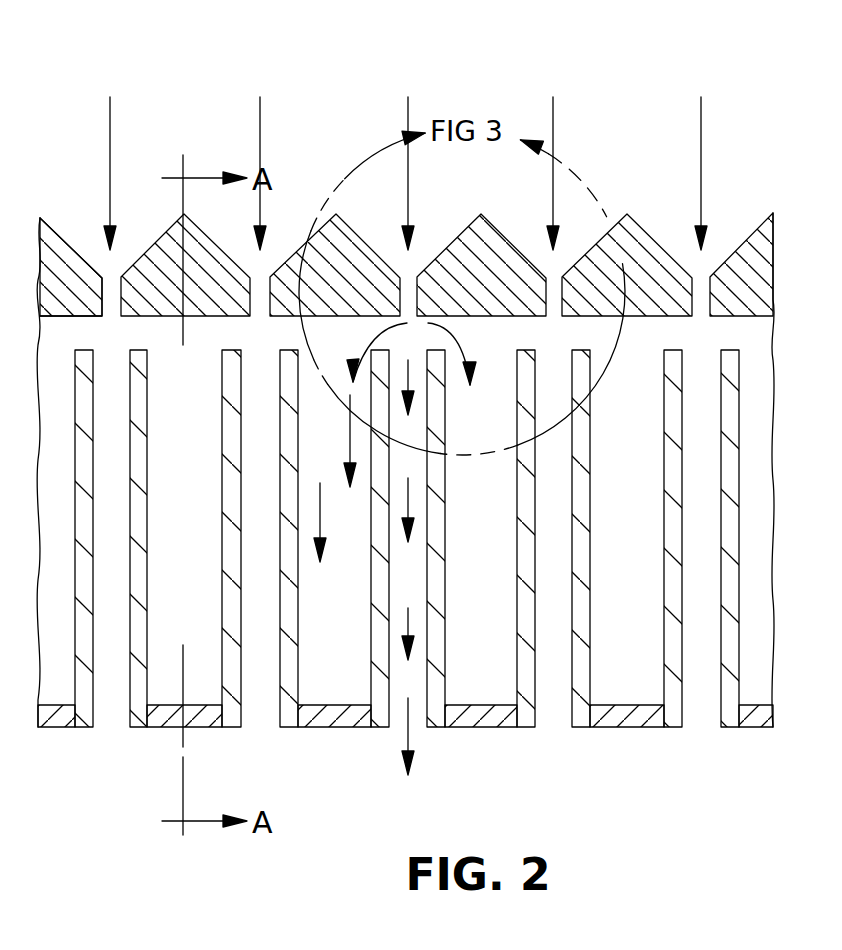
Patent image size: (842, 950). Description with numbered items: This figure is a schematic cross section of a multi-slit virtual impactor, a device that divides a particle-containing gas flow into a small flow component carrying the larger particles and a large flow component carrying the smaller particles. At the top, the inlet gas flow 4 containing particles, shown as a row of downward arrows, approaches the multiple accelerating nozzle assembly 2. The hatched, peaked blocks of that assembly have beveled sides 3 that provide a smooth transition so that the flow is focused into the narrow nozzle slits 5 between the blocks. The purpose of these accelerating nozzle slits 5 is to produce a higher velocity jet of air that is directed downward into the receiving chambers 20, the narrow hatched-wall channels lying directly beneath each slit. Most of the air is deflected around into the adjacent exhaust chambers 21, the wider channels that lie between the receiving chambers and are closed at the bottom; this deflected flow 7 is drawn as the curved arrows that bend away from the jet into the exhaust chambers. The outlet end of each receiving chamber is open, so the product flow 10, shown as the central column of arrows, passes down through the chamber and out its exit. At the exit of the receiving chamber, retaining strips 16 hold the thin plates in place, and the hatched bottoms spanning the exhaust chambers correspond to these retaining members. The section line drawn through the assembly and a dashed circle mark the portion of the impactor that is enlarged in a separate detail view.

The multiple accelerating nozzle assembly 2 is at (779, 186).
The beveled sides 3 is at (622, 264).
The inlet gas flow 4 is at (70, 110).
The nozzle slits 5 is at (407, 285).
The gas flow into chamber 7 is at (360, 352).
The product flow 10 is at (413, 745).
The retaining strips 16 is at (320, 733).
The receiving chambers 20 is at (113, 700).
The exhaust chambers 21 is at (168, 541).